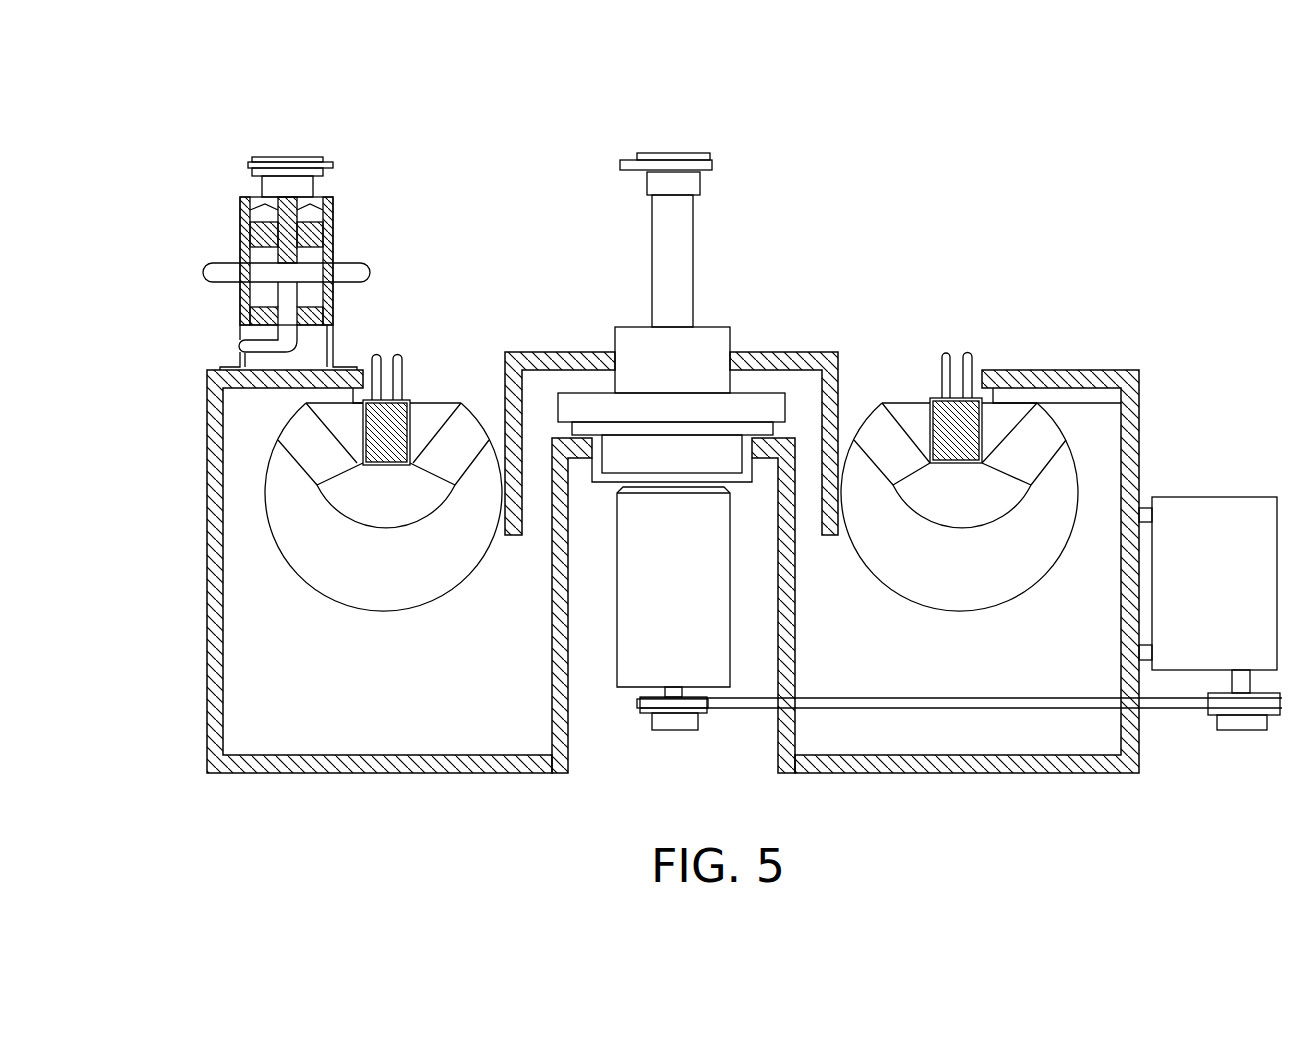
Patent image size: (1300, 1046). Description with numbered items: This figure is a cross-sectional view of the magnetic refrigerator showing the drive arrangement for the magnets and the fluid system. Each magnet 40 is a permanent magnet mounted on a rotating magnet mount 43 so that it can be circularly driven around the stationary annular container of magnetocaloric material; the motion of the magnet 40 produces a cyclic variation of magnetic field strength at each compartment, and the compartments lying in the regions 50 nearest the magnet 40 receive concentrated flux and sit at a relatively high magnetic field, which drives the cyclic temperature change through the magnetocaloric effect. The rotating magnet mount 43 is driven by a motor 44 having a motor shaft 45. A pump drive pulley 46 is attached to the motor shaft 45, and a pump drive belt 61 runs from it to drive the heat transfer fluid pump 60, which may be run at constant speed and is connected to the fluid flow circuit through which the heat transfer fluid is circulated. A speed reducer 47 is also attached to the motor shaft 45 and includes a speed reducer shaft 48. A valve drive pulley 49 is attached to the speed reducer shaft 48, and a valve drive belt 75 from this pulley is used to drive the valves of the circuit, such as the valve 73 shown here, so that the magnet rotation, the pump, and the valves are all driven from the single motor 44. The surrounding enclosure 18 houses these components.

The tank 18 is at (210, 396).
The magnet 40 is at (372, 492).
The rotating magnet mount 43 is at (564, 362).
The motor 44 is at (628, 665).
The motor shaft 45 is at (678, 695).
The pump drive pulley 46 is at (650, 718).
The speed reducer 47 is at (680, 447).
The speed reducer shaft 48 is at (675, 279).
The valve drive pulley 49 is at (703, 160).
The regions nearest the magnets 50 is at (397, 405).
The heat transfer fluid pump 60 is at (1225, 526).
The pump drive belt 61 is at (750, 700).
The valve 73 is at (333, 238).
The valve drive belt 75 is at (620, 165).